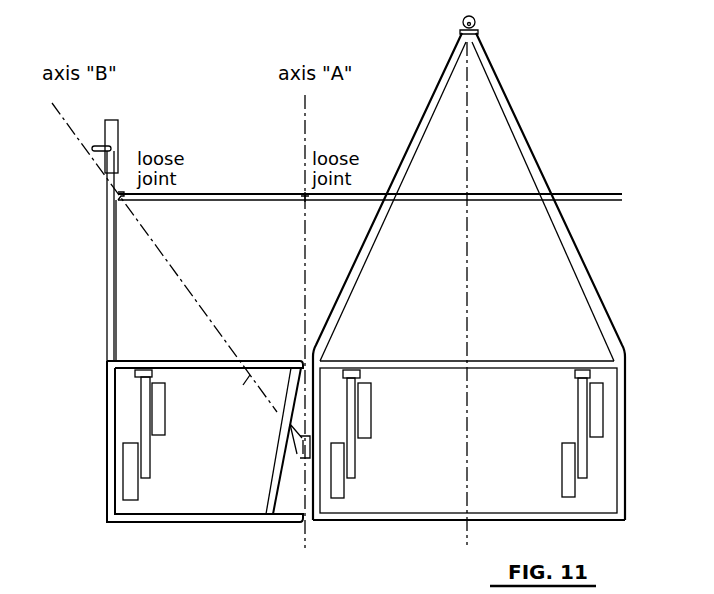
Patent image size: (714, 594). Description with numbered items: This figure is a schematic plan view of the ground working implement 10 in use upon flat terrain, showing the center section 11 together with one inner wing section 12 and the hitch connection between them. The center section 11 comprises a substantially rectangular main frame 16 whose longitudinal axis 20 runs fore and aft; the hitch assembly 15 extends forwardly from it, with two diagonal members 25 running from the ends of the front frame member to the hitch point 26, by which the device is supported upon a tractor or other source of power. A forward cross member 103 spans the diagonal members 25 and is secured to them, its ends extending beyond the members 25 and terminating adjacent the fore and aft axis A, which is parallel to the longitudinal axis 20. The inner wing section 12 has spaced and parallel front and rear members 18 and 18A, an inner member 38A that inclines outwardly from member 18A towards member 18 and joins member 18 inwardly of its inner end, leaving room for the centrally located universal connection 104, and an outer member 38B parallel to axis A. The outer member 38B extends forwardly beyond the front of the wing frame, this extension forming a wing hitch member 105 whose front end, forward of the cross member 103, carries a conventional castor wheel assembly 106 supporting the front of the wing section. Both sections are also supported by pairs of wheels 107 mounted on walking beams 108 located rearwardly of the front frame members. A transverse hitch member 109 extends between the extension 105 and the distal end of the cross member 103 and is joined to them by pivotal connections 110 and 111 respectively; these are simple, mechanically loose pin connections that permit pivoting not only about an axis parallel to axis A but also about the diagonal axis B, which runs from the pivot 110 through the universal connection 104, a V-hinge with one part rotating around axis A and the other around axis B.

The ground working implement 10 is at (562, 275).
The center section 11 is at (500, 382).
The inner wing section 12 is at (241, 385).
The hitch assembly 15 is at (603, 306).
The main frame 16 is at (452, 370).
The frame 18 is at (165, 448).
The rear member 18A is at (200, 366).
The longitudinal axis 20 is at (467, 345).
The diagonal member 25 is at (356, 282).
The hitch point 26 is at (476, 22).
The inner member 38A is at (276, 486).
The outer member 38B is at (107, 410).
The forward cross member 103 is at (432, 198).
The universal connection 104 is at (298, 455).
The wing hitch member 105 is at (107, 310).
The castor wheel assembly 106 is at (112, 136).
The wheel 107 is at (163, 408).
The walking beam 108 is at (150, 462).
The transverse hitch member 109 is at (255, 200).
The pivotal connection 110 is at (122, 200).
The pivotal connection 111 is at (306, 202).